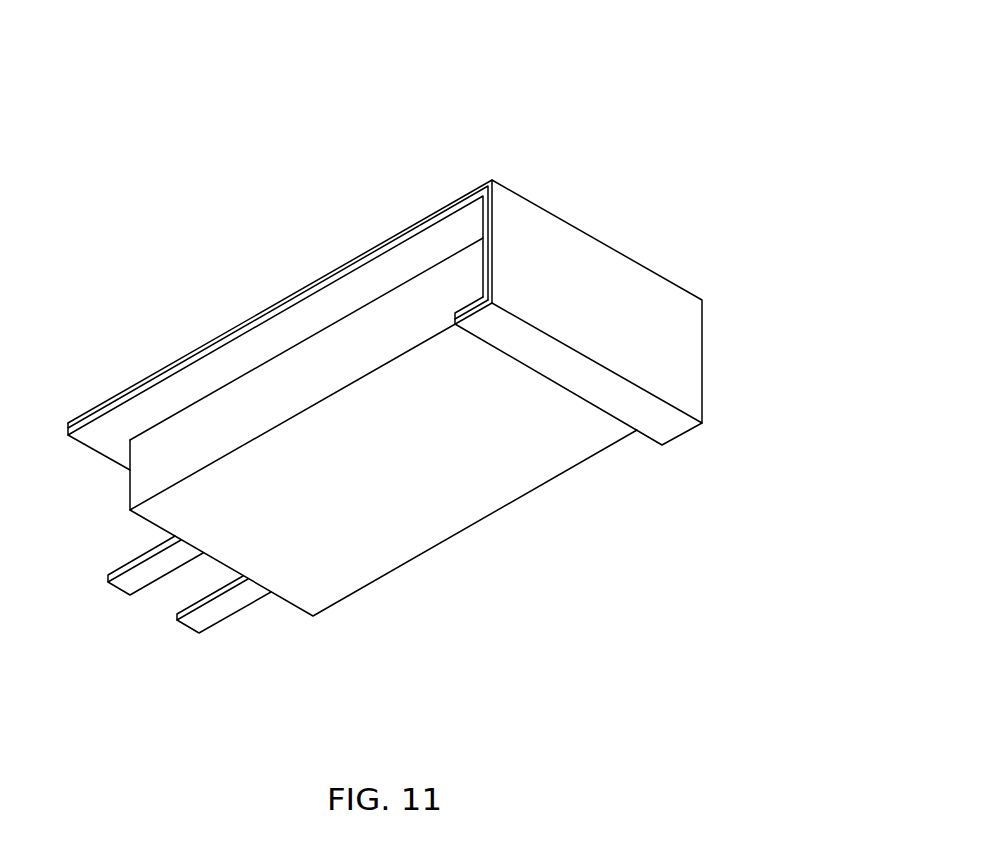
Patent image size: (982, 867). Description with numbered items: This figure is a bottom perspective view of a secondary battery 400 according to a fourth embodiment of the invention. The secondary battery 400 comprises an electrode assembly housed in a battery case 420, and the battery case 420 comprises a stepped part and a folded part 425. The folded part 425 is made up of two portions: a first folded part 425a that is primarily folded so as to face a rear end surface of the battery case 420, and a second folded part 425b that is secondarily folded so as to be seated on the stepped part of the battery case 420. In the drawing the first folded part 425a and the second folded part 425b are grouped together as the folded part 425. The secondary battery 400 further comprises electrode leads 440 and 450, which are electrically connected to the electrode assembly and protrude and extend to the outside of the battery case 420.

The secondary battery 400 is at (606, 38).
The battery case 420 is at (368, 227).
The folded part 425 is at (760, 198).
The first folded part 425a is at (493, 248).
The second folded part 425b is at (468, 317).
The electrode lead 440 is at (190, 622).
The electrode lead 450 is at (128, 588).